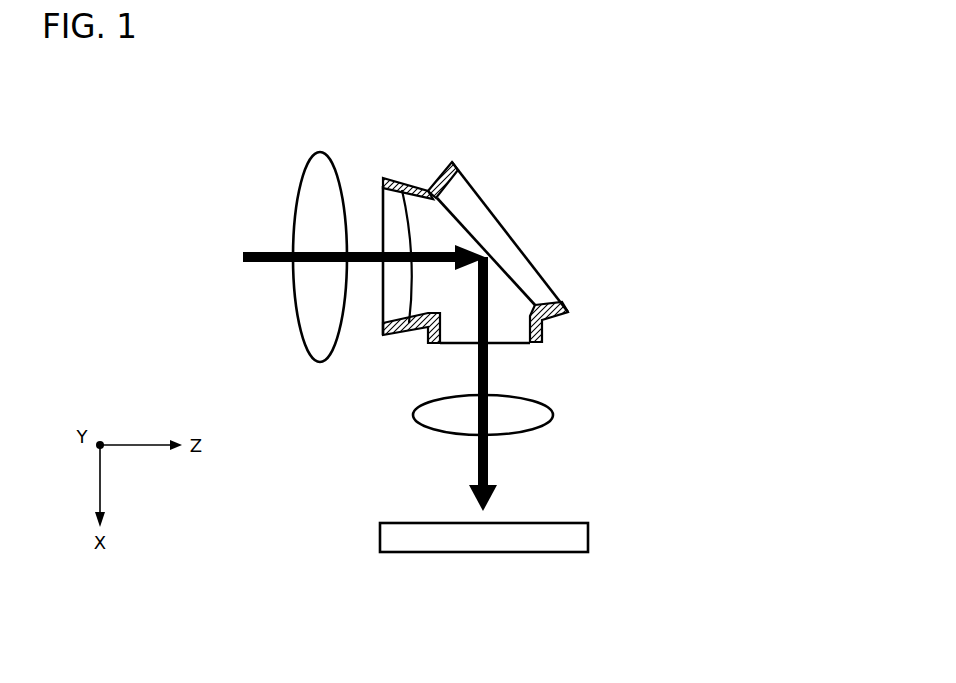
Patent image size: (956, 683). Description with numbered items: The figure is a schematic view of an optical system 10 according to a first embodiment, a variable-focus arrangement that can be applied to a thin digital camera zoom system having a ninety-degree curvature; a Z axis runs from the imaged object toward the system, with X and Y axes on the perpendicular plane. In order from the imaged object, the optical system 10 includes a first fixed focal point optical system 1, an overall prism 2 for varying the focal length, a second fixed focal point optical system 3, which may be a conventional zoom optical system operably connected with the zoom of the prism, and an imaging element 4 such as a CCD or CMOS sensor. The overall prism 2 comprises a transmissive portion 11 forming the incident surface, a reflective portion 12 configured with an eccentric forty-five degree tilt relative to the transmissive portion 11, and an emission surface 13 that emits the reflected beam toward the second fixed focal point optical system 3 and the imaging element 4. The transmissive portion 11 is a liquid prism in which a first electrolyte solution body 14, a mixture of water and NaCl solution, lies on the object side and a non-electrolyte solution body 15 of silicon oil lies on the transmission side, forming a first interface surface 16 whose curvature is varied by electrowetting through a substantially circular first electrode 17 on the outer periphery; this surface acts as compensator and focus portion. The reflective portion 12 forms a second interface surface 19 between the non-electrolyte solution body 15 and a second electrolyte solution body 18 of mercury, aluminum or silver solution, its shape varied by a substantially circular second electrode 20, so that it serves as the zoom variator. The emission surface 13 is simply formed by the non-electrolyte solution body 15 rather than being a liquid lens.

The first fixed focal point optical system 1 is at (302, 337).
The overall prism 2 is at (471, 232).
The second fixed focal point optical system 3 is at (535, 428).
The imaging element 4 is at (533, 552).
The optical system 10 is at (525, 67).
The transmissive portion 11 is at (401, 168).
The reflective portion 12 is at (433, 157).
The emission surface 13 is at (510, 343).
The first electrolyte solution body 14 is at (393, 292).
The non-electrolyte solution body 15 is at (528, 241).
The first interface surface 16 is at (409, 335).
The first electrode 17 is at (381, 183).
The second electrolyte solution body 18 is at (478, 210).
The second interface surface 19 is at (503, 248).
The second electrode 20 is at (460, 162).